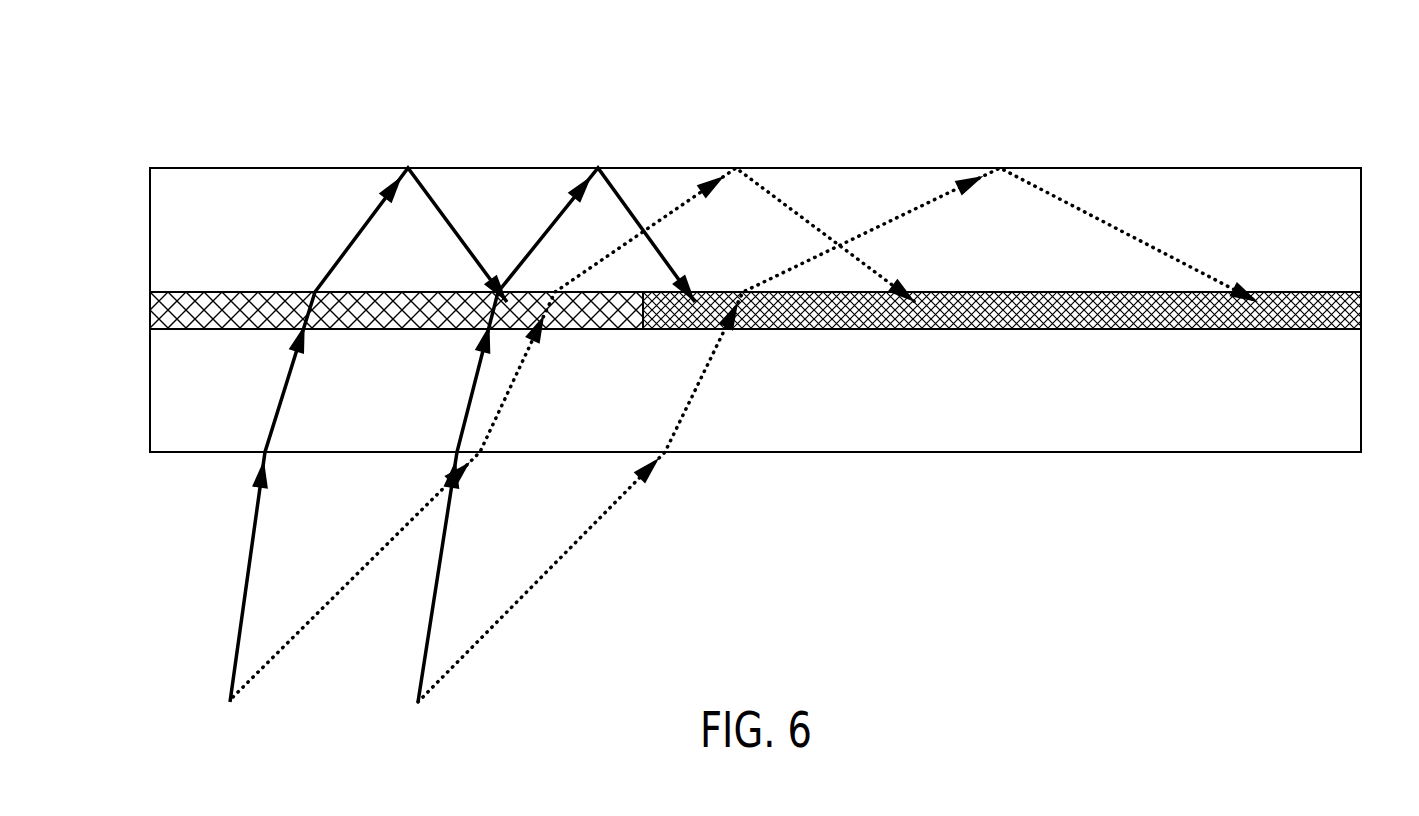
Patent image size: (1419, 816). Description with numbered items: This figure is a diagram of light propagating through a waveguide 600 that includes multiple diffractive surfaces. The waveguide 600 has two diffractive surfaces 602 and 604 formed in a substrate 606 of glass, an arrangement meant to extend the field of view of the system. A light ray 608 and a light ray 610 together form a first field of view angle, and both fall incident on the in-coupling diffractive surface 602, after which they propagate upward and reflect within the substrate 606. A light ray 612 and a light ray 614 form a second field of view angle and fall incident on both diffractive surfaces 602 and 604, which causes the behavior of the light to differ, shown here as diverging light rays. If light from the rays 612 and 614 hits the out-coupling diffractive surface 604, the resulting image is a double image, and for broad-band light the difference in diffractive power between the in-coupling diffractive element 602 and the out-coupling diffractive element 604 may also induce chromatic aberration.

The waveguide 600 is at (1178, 102).
The diffractive surface 602 is at (165, 309).
The diffractive surface 604 is at (1348, 309).
The substrate 606 is at (1305, 183).
The light ray 608 is at (236, 650).
The light ray 610 is at (258, 678).
The light ray 612 is at (425, 650).
The light ray 614 is at (450, 673).